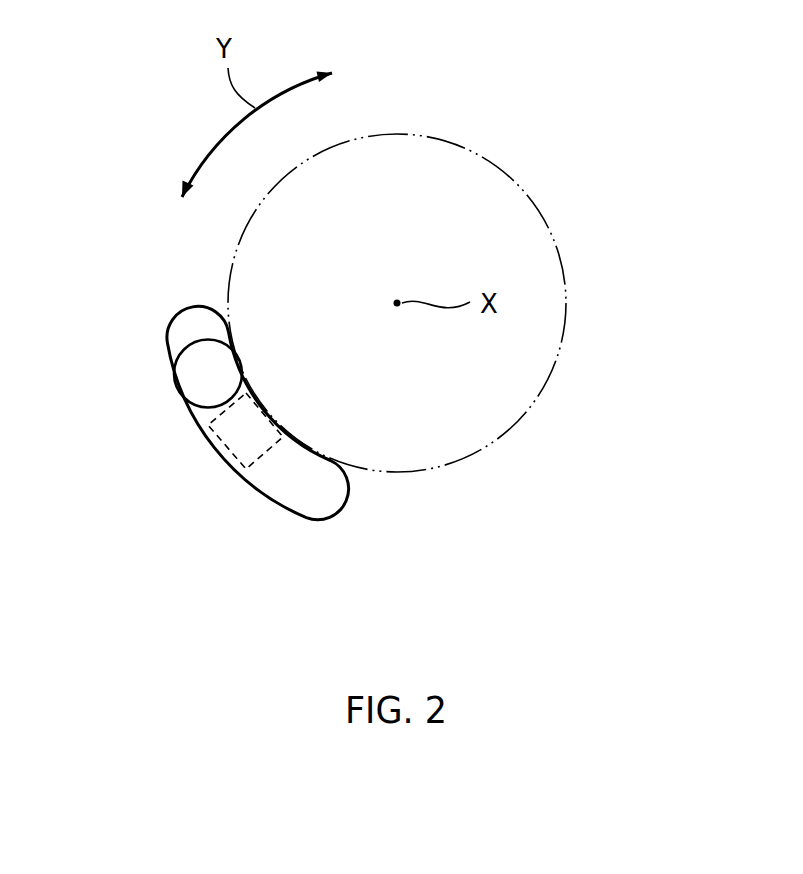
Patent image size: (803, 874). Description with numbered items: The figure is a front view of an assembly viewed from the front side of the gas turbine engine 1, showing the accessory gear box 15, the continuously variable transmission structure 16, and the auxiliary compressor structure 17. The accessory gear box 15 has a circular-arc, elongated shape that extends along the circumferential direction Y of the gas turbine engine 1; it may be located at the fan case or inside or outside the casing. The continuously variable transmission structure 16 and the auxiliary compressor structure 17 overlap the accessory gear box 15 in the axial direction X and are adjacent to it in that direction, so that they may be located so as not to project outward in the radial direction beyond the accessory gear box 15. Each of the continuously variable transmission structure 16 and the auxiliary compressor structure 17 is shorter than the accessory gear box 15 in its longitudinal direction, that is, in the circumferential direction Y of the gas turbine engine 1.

The gas turbine engine 1 is at (561, 126).
The accessory gear box 15 is at (320, 520).
The continuously variable transmission structure 16 is at (225, 457).
The auxiliary compressor structure 17 is at (195, 383).